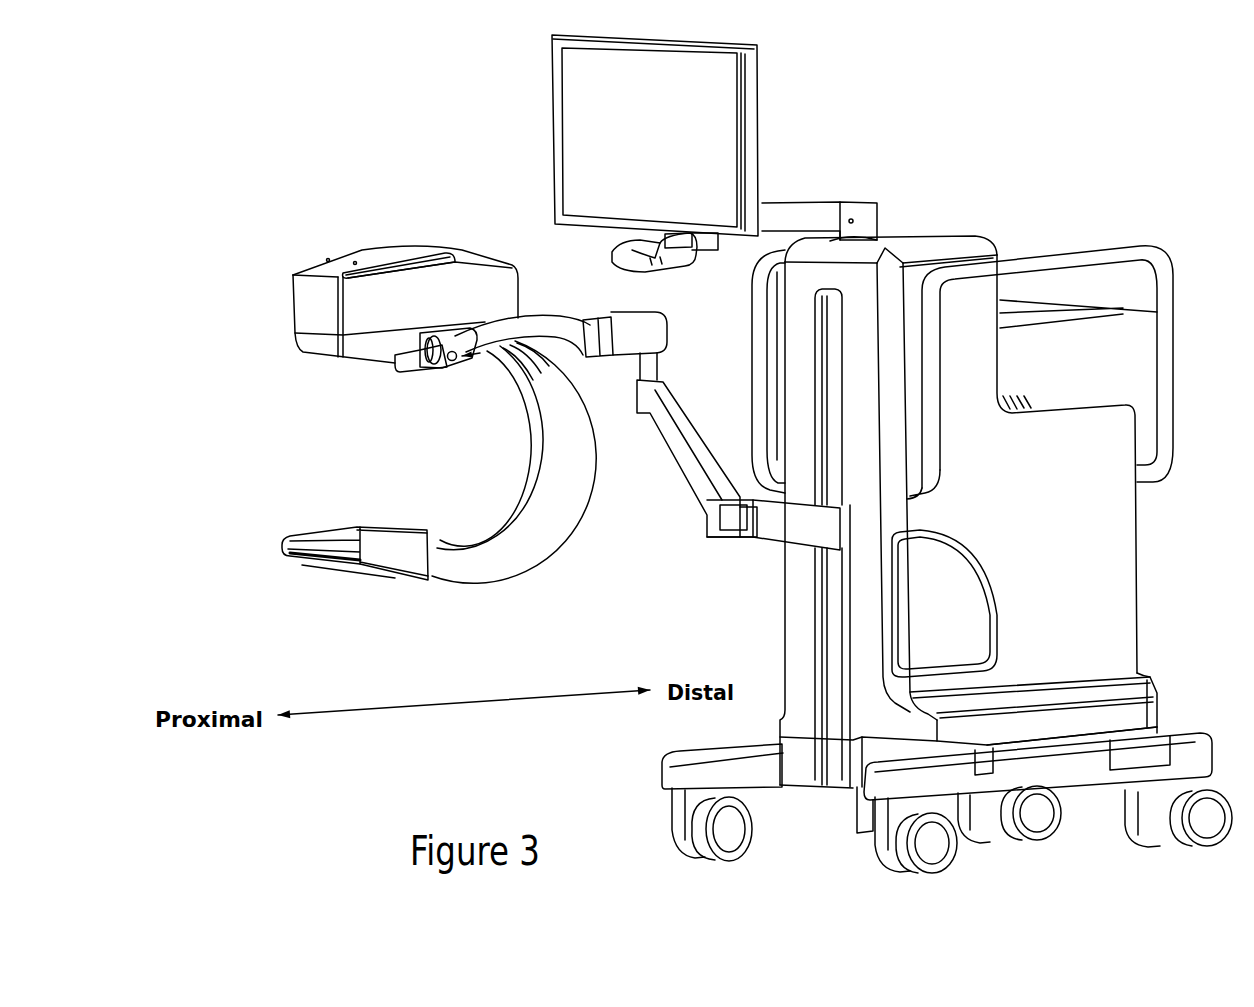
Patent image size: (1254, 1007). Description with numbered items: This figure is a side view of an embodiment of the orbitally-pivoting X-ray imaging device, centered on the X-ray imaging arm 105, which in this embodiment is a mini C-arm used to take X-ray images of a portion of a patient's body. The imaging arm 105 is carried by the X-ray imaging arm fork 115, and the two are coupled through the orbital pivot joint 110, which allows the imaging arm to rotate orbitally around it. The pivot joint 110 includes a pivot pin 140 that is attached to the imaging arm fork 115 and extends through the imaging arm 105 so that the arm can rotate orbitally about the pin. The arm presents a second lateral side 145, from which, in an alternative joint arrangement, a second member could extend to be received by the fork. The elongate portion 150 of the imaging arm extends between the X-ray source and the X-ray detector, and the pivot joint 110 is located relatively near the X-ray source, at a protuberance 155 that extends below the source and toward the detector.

The X-ray imaging arm 105 is at (393, 293).
The orbital pivot joint 110 is at (445, 369).
The X-ray imaging arm fork 115 is at (505, 323).
The pivot pin 140 is at (457, 363).
The second lateral side 145 is at (460, 307).
The elongate portion 150 is at (525, 525).
The protuberance 155 is at (408, 378).